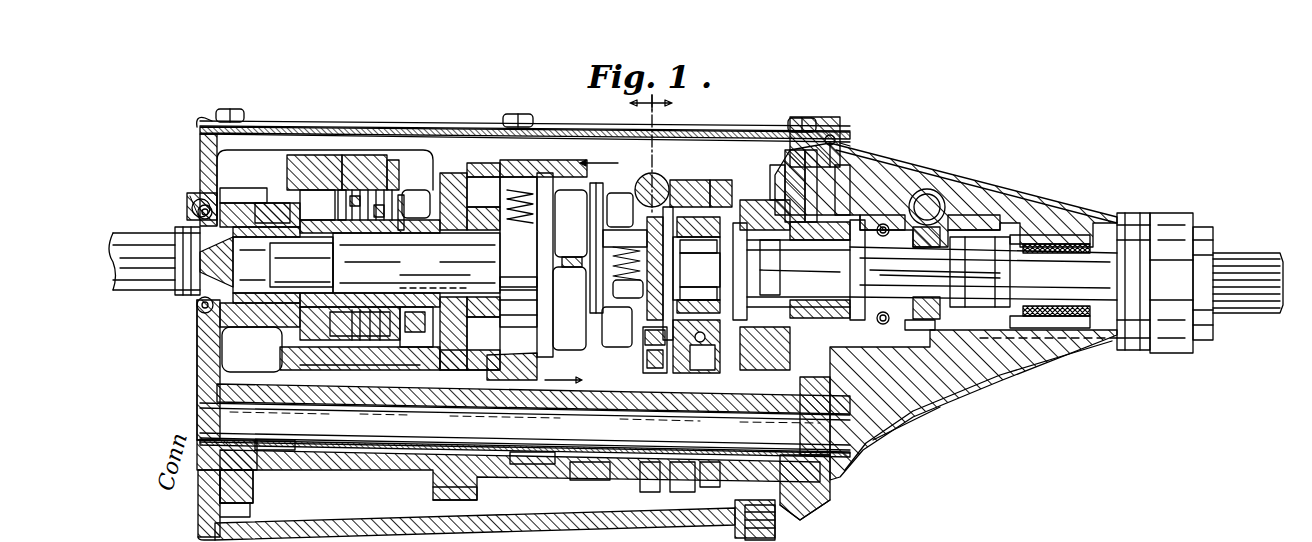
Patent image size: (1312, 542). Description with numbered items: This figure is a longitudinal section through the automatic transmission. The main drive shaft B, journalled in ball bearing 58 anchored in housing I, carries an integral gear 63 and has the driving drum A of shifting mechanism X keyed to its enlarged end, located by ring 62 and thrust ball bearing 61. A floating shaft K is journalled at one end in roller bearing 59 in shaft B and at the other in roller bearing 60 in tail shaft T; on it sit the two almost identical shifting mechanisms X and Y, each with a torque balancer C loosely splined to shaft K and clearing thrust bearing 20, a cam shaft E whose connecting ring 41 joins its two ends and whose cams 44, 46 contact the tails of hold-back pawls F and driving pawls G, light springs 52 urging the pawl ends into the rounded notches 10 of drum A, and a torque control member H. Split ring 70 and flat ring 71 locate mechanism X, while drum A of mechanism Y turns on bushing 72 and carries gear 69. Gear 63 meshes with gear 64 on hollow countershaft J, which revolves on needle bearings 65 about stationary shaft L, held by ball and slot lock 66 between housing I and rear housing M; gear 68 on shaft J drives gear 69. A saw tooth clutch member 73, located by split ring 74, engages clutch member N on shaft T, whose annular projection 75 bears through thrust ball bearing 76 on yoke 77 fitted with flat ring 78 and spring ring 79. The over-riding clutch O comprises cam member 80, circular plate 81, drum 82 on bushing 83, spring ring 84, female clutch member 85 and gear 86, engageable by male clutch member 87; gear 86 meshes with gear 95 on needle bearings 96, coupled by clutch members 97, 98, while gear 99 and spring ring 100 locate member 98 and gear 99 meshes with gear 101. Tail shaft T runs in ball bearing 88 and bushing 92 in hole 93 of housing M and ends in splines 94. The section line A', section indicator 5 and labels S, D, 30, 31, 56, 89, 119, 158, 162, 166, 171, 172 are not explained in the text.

The rounded notches 10 is at (581, 274).
The thrust bearing 20 is at (290, 205).
The gear 30 is at (470, 168).
The plate 31 is at (510, 215).
The connecting ring 41 is at (365, 178).
The cams 44 is at (385, 178).
The cams 46 is at (402, 195).
The light springs 52 is at (570, 257).
The block 56 is at (622, 232).
The ball bearing 58 is at (197, 307).
The roller bearing 59 is at (192, 212).
The roller bearing 60 is at (778, 165).
The thrust ball bearing 61 is at (252, 349).
The ring 62 is at (262, 200).
The gear 63 is at (198, 200).
The gear 64 is at (245, 485).
The needle bearings 65 is at (270, 452).
The ball and slot lock 66 is at (848, 440).
The gear 68 is at (445, 495).
The gear 69 is at (416, 345).
The split ring 70 is at (440, 240).
The flat ring 71 is at (417, 333).
The bushing 72 is at (488, 369).
The saw tooth clutch member 73 is at (690, 183).
The split ring 74 is at (655, 350).
The annular projection 75 is at (704, 346).
The thrust ball bearing 76 is at (745, 200).
The yoke 77 is at (752, 200).
The flat ring 78 is at (711, 351).
The spring ring 79 is at (656, 359).
The cam member 80 is at (830, 160).
The circular plate 81 is at (810, 150).
The drum 82 is at (838, 140).
The bushing 83 is at (840, 175).
The spring ring 84 is at (905, 412).
The female clutch member 85 is at (905, 190).
The gear 86 is at (820, 130).
The male clutch member 87 is at (893, 225).
The ball bearing 88 is at (942, 232).
The ring 89 is at (945, 320).
The bushing 92 is at (1048, 330).
The hole 93 is at (1068, 242).
The splines 94 is at (1245, 262).
The gear 95 is at (800, 528).
The needle bearings 96 is at (825, 515).
The male clutch member 97 is at (741, 521).
The female clutch member 98 is at (700, 505).
The gear 99 is at (598, 480).
The spring ring 100 is at (659, 487).
The gear 101 is at (612, 348).
The clutch member 119 is at (690, 215).
The plate 158 is at (795, 150).
The ring 162 is at (870, 170).
The shaft 166 is at (640, 178).
The pin 171 is at (345, 175).
The cap 172 is at (232, 108).
The driving drum A is at (636, 155).
The section line A' is at (410, 377).
The main drive shaft B is at (150, 233).
The torque balancer C is at (448, 165).
The member D is at (300, 195).
The cam shaft E is at (312, 175).
The hold-back pawls F is at (386, 180).
The driving pawls G is at (571, 223).
The torque control member H is at (522, 244).
The housing I is at (197, 362).
The hollow countershaft J is at (340, 460).
The floating shaft K is at (283, 265).
The stationary shaft L is at (525, 430).
The rear housing M is at (990, 195).
The clutch member N is at (719, 183).
The over-riding clutch O is at (833, 128).
The sleeve S is at (980, 272).
The tail shaft T is at (966, 273).
The shifting mechanism X is at (355, 150).
The shifting mechanism Y is at (547, 173).
The section line 5 is at (669, 105).